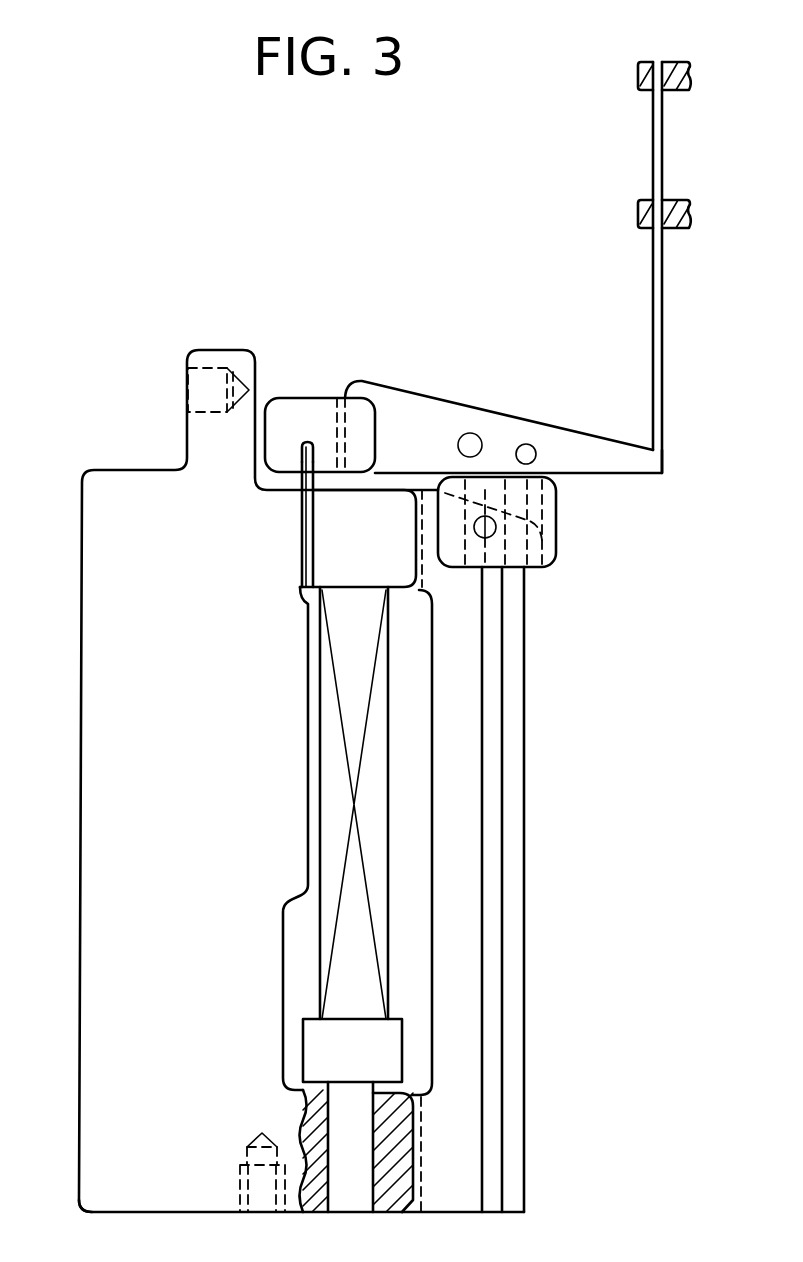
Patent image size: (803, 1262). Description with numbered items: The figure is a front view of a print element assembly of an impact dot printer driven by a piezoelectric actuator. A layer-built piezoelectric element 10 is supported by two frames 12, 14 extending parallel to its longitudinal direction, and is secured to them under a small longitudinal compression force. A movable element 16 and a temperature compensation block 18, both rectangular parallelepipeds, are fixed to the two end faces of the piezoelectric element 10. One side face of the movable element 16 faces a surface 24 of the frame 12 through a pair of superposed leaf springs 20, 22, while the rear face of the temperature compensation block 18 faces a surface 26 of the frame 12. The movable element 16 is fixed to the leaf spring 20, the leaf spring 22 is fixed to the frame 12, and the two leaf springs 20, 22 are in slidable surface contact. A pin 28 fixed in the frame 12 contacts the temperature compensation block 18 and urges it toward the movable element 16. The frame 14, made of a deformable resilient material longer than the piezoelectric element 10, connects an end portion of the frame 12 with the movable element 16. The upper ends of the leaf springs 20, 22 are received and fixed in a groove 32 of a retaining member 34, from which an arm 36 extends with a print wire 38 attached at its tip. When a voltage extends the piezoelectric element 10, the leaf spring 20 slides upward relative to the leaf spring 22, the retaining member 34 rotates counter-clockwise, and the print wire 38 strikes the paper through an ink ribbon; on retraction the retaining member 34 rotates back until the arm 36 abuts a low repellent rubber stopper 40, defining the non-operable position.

The layer-built piezoelectric element 10 is at (332, 735).
The frame 12 is at (92, 700).
The frame 14 is at (512, 853).
The movable element 16 is at (354, 568).
The temperature compensation block 18 is at (318, 1046).
The leaf spring 20 is at (310, 577).
The leaf spring 22 is at (303, 548).
The surface 24 is at (303, 510).
The surface 26 is at (380, 1088).
The pin 28 is at (345, 1115).
The groove 32 is at (300, 458).
The retaining member 34 is at (312, 412).
The arm 36 is at (396, 410).
The print wire 38 is at (663, 349).
The stopper 40 is at (543, 512).